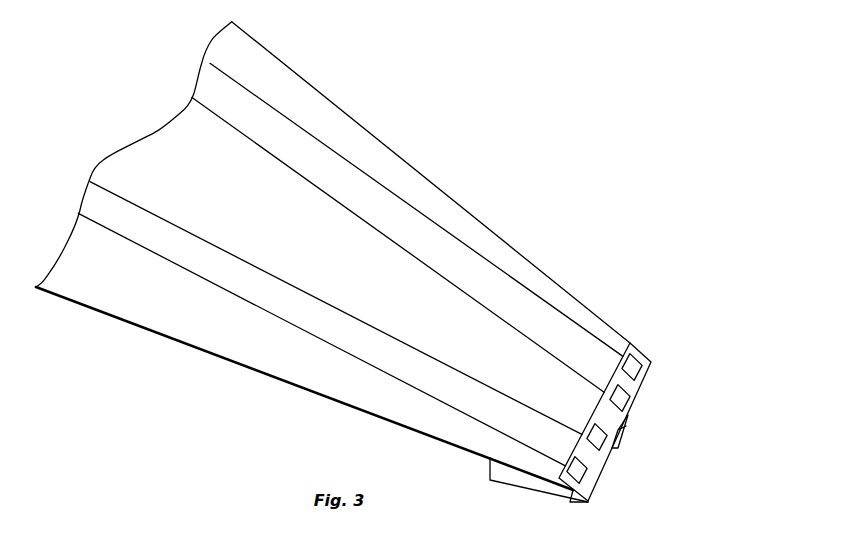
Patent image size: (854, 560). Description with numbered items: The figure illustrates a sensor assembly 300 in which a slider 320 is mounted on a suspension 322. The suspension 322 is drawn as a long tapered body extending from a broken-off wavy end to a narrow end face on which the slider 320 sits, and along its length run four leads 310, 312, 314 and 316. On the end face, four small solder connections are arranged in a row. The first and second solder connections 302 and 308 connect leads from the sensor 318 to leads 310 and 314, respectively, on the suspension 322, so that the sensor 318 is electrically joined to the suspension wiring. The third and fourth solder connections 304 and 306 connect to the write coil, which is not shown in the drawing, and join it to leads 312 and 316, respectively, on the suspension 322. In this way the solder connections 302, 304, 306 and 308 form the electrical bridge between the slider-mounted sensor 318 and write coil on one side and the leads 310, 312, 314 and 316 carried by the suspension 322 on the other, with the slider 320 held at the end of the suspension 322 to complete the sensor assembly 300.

The sensor assembly 300 is at (187, 417).
The first solder connection 302 is at (577, 487).
The third solder connection 304 is at (603, 457).
The fourth solder connection 306 is at (628, 400).
The second solder connection 308 is at (651, 362).
The lead 310 is at (295, 323).
The lead 312 is at (433, 354).
The lead 314 is at (490, 267).
The lead 316 is at (543, 343).
The sensor 318 is at (628, 430).
The slider 320 is at (523, 479).
The suspension 322 is at (425, 430).